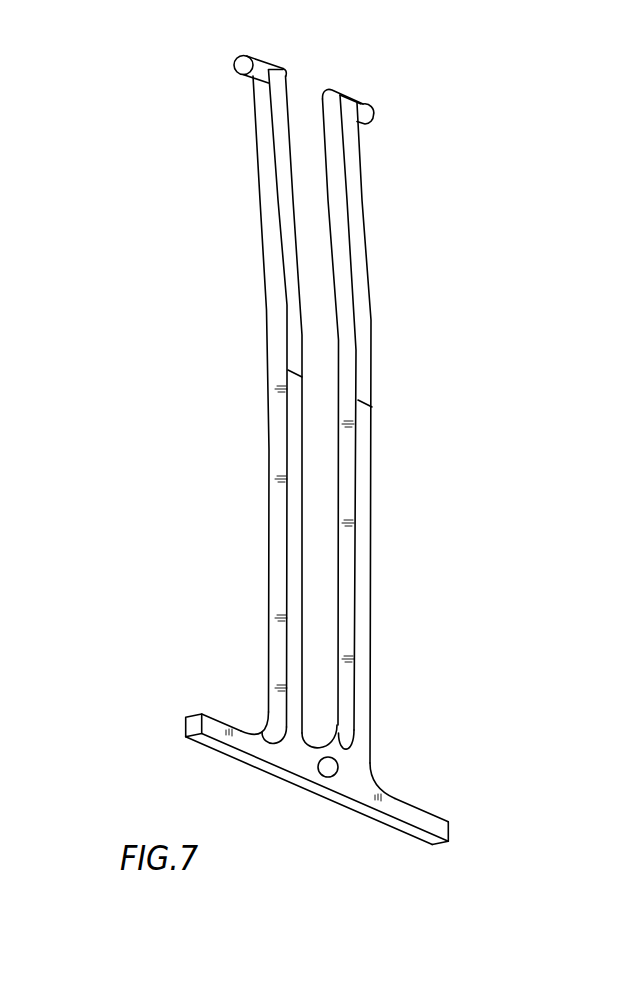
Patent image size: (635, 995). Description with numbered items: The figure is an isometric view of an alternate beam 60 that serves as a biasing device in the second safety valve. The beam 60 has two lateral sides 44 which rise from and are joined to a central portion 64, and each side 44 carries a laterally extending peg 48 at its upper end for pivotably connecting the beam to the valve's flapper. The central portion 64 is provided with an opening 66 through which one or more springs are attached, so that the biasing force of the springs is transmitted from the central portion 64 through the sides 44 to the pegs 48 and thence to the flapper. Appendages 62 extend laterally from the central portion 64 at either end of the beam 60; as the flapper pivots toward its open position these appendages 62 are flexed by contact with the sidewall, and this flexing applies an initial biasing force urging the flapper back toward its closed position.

The lateral sides 44 is at (266, 335).
The laterally extending pegs 48 is at (259, 55).
The alternate beam 60 is at (507, 214).
The appendages 62 is at (216, 721).
The central portion 64 is at (372, 738).
The opening 66 is at (338, 767).